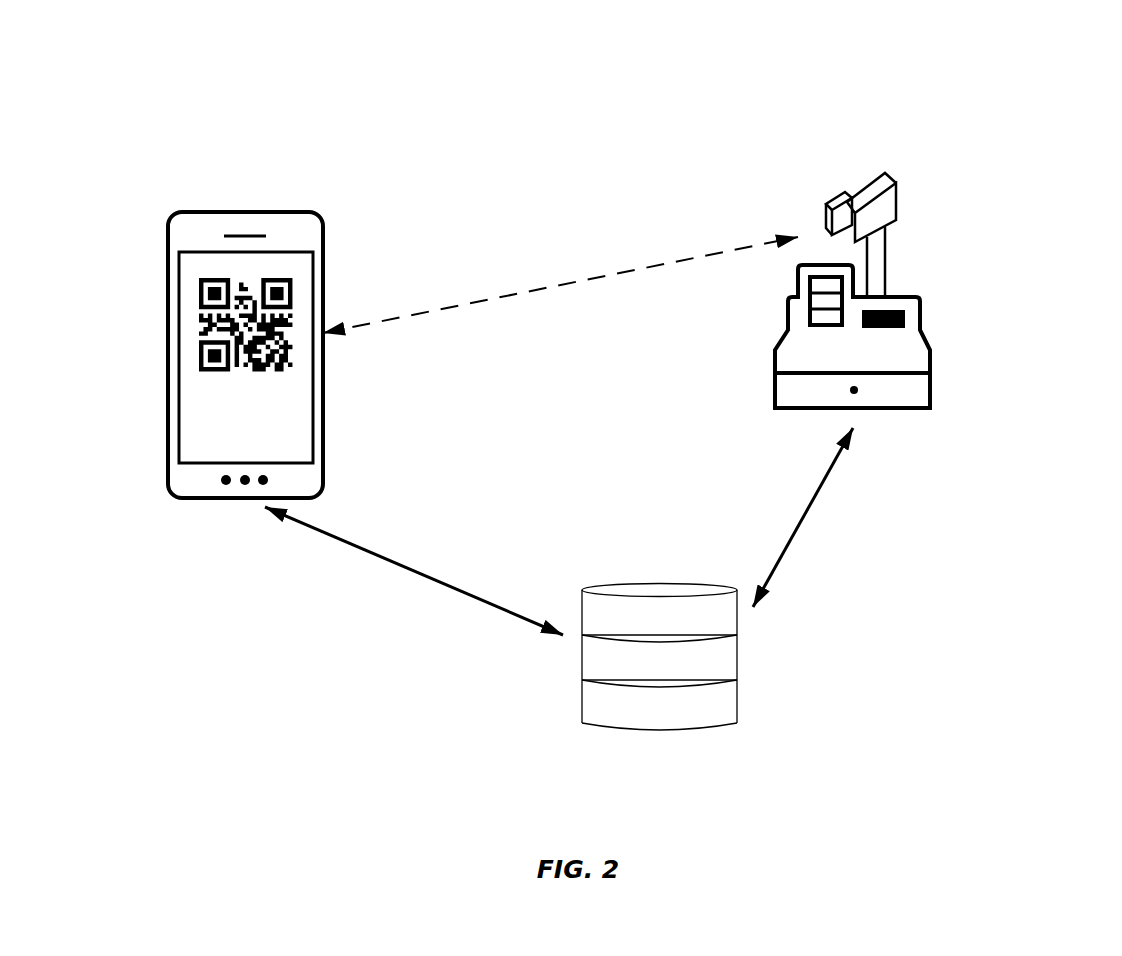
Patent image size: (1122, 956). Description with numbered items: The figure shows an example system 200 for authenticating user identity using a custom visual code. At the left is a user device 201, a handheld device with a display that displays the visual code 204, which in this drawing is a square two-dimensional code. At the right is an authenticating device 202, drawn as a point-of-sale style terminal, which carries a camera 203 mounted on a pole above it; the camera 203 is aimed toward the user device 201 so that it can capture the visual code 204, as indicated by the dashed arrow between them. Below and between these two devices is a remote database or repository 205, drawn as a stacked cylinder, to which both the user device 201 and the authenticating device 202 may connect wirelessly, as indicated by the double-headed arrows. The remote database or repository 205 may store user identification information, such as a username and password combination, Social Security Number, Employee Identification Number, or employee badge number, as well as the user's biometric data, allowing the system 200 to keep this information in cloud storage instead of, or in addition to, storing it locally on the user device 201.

The system 200 is at (131, 95).
The user device 201 is at (204, 212).
The authenticating device 202 is at (940, 393).
The camera 203 is at (830, 195).
The visual code 204 is at (197, 352).
The remote database or repository 205 is at (623, 578).